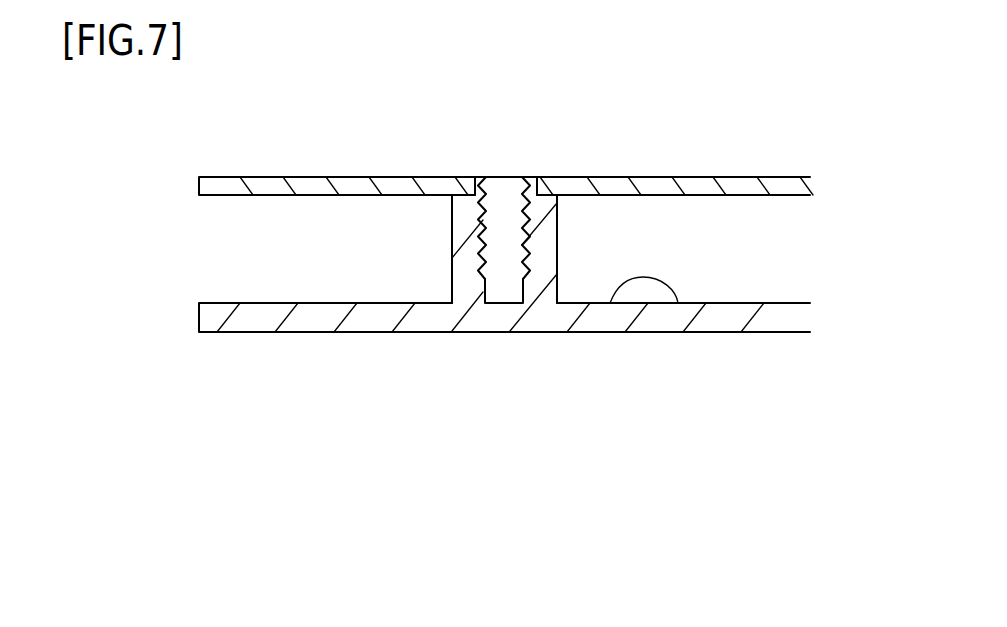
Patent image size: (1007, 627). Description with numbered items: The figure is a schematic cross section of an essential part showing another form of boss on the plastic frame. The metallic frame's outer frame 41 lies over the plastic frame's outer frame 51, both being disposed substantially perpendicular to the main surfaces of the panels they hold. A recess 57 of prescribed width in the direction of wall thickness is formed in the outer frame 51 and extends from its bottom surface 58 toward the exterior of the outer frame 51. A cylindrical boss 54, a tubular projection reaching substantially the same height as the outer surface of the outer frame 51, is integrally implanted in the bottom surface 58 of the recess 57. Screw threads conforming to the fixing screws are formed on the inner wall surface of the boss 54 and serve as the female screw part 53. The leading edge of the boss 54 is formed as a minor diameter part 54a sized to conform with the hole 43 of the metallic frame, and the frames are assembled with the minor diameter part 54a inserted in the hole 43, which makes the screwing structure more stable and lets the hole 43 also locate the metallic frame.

The outer frame 41 is at (700, 187).
The hole 43 is at (524, 178).
The outer frame 51 is at (258, 331).
The female screw part 53 is at (518, 222).
The boss 54 is at (483, 220).
The minor diameter part 54a is at (477, 180).
The recess 57 is at (755, 272).
The bottom surface 58 is at (678, 303).